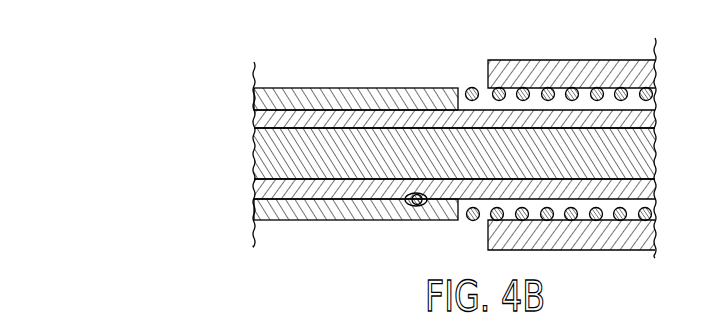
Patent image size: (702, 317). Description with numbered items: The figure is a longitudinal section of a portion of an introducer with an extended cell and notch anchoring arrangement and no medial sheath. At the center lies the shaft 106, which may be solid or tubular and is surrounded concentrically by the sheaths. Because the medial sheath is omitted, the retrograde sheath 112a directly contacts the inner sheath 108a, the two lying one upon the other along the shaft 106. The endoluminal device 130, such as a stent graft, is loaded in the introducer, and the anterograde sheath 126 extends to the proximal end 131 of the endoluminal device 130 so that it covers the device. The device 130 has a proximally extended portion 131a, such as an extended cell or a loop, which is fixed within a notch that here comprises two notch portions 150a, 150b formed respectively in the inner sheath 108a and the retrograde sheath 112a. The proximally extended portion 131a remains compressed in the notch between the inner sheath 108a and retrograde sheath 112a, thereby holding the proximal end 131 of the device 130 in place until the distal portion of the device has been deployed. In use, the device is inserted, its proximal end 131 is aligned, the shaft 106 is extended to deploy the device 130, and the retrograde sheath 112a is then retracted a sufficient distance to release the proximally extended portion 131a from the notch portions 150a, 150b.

The shaft 106 is at (276, 154).
The inner sheath 108a is at (272, 190).
The retrograde sheath 112a is at (290, 222).
The anterograde sheath 126 is at (562, 60).
The endoluminal device 130 is at (622, 88).
The proximal end of device 131 is at (465, 83).
The proximally extended portion 131a is at (422, 206).
The notch portion 150a is at (409, 193).
The notch portion 150b is at (407, 205).